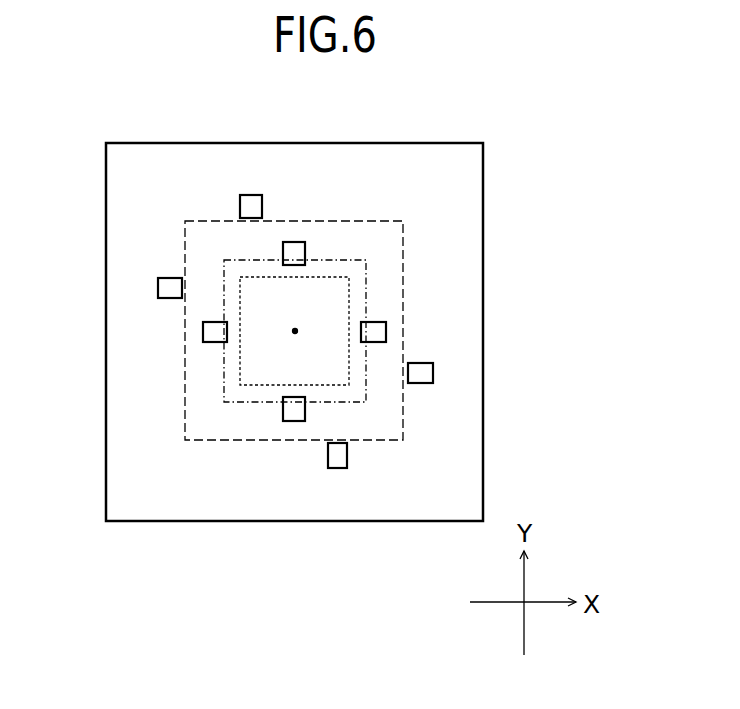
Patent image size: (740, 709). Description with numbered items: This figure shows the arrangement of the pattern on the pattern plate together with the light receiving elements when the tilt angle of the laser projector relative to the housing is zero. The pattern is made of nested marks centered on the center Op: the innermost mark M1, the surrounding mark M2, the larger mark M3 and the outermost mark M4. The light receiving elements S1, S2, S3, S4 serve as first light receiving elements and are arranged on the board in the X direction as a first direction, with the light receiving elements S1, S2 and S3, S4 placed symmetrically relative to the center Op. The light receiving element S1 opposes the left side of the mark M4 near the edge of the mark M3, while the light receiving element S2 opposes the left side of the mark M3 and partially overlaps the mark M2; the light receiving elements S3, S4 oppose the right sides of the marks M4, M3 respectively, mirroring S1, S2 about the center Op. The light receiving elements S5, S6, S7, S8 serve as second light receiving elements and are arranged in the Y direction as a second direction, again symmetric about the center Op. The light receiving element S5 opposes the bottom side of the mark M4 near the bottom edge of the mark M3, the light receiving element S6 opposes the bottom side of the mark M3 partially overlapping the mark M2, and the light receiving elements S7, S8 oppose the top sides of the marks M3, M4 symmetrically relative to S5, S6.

The mark M1 is at (349, 303).
The mark M2 is at (366, 277).
The mark M3 is at (373, 221).
The mark M4 is at (387, 168).
The light receiving element S1 is at (158, 289).
The light receiving element S2 is at (203, 332).
The light receiving element S3 is at (386, 331).
The light receiving element S4 is at (433, 372).
The light receiving element S5 is at (337, 468).
The light receiving element S6 is at (293, 421).
The light receiving element S7 is at (293, 242).
The light receiving element S8 is at (252, 195).
The center of the pattern Op is at (295, 331).